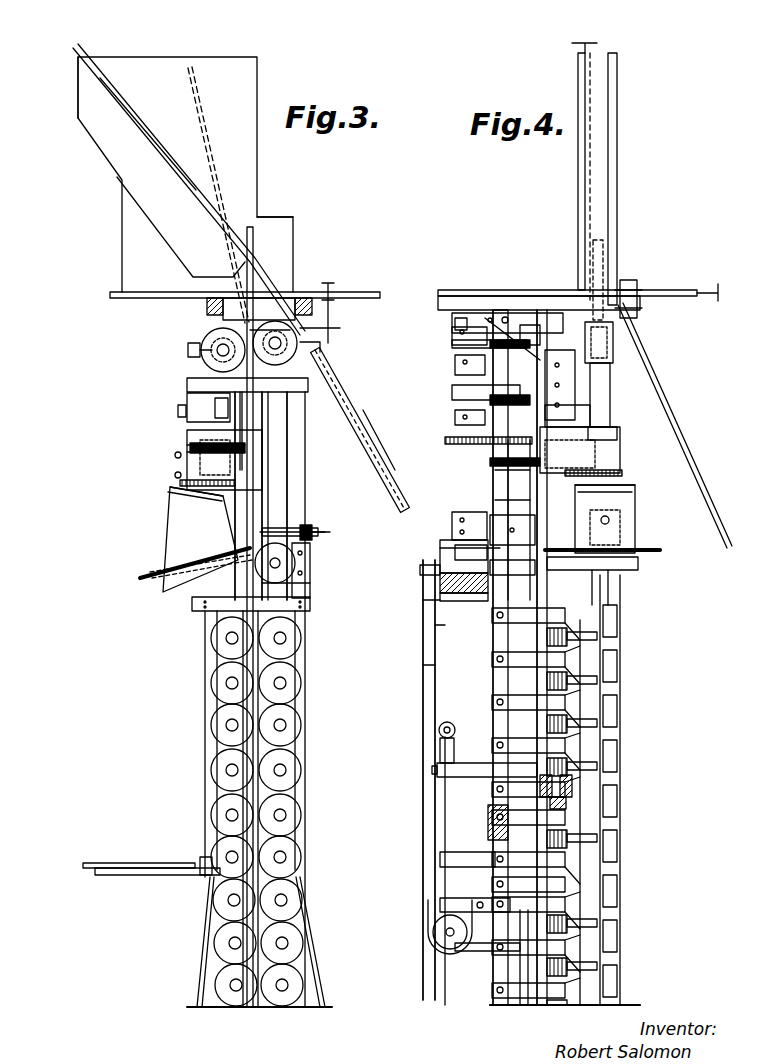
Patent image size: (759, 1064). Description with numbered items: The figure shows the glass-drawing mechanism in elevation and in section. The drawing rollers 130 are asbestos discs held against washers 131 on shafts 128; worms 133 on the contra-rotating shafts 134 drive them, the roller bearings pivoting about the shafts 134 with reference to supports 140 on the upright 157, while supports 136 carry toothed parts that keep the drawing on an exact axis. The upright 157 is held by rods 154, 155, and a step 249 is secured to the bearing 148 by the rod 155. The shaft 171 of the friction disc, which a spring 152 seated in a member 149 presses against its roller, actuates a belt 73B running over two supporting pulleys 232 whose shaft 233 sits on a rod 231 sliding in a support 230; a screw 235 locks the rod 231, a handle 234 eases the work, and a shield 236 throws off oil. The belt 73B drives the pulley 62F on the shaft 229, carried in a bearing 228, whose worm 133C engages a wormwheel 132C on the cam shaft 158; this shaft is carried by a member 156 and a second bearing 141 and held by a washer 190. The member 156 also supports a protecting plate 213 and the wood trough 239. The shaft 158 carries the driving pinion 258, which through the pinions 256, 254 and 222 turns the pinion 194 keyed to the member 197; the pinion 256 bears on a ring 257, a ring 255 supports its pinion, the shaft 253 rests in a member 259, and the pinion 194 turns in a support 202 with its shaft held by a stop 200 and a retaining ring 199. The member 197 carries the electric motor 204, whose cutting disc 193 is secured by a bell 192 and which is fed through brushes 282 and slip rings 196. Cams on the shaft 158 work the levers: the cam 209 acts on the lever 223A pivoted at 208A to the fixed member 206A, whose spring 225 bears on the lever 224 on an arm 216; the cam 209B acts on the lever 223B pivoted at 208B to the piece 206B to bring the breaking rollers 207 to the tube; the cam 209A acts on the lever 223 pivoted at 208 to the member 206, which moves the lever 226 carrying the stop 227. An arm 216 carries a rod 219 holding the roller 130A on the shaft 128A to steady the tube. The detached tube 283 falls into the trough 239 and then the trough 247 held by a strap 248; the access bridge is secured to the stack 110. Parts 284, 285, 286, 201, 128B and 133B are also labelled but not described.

In FIG. 3, the feed rod 284 is at (116, 98).
In FIG. 3, the detached tube 283 is at (203, 110).
In FIG. 3, the vertical rod 286 is at (246, 228).
In FIG. 4, the vertical rod 286 is at (595, 250).
In FIG. 3, the wood trough 239 is at (120, 120).
In FIG. 4, the wood trough 239 is at (612, 140).
In FIG. 3, the member 156 is at (210, 298).
In FIG. 4, the member 156 is at (632, 296).
In FIG. 3, the protecting plate 213 is at (332, 292).
In FIG. 4, the protecting plate 213 is at (715, 290).
In FIG. 3, the strap 248 is at (310, 345).
In FIG. 3, the support 140 is at (205, 340).
In FIG. 4, the support 140 is at (490, 325).
In FIG. 3, the rollers 207 is at (298, 352).
In FIG. 4, the rollers 207 is at (615, 335).
In FIG. 3, the arm 216 is at (318, 350).
In FIG. 4, the arm 216 is at (613, 352).
In FIG. 3, the lever 224 is at (190, 393).
In FIG. 4, the lever 224 is at (600, 400).
In FIG. 3, the spring 225 is at (195, 400).
In FIG. 4, the spring 225 is at (462, 320).
In FIG. 3, the retaining ring 199 is at (187, 408).
In FIG. 3, the stop 200 is at (190, 432).
In FIG. 3, the slip rings 196 is at (187, 455).
In FIG. 3, the brushes 282 is at (175, 473).
In FIG. 3, the ring 255 is at (190, 485).
In FIG. 4, the ring 255 is at (512, 482).
In FIG. 3, the pinion 194 is at (170, 490).
In FIG. 4, the pinion 194 is at (618, 478).
In FIG. 3, the member 197 is at (175, 510).
In FIG. 4, the member 197 is at (615, 492).
In FIG. 3, the box 201 is at (168, 537).
In FIG. 4, the box 201 is at (635, 520).
In FIG. 3, the electric motor 204 is at (160, 560).
In FIG. 4, the electric motor 204 is at (635, 540).
In FIG. 3, the cutting disc 193 is at (147, 578).
In FIG. 4, the cutting disc 193 is at (655, 551).
In FIG. 3, the bell 192 is at (190, 603).
In FIG. 4, the bell 192 is at (640, 566).
In FIG. 3, the rod 219 is at (262, 482).
In FIG. 4, the rod 219 is at (542, 588).
In FIG. 3, the shafts 134 is at (237, 500).
In FIG. 4, the shafts 134 is at (560, 787).
In FIG. 3, the driving pinion 258 is at (305, 518).
In FIG. 3, the stop 227 is at (300, 530).
In FIG. 3, the member 206 is at (322, 533).
In FIG. 3, the pinion 222 is at (325, 540).
In FIG. 4, the pinion 222 is at (622, 470).
In FIG. 3, the lever 226 is at (298, 560).
In FIG. 3, the shaft 128A is at (297, 565).
In FIG. 3, the roller 130A is at (305, 585).
In FIG. 3, the drawing rollers 130 is at (300, 718).
In FIG. 4, the drawing rollers 130 is at (615, 700).
In FIG. 3, the shafts 128 is at (278, 1000).
In FIG. 3, the bearing 148 is at (207, 862).
In FIG. 4, the bearing 148 is at (440, 900).
In FIG. 3, the step 249 is at (128, 858).
In FIG. 4, the step 249 is at (452, 905).
In FIG. 3, the rod 155 is at (210, 940).
In FIG. 4, the rod 155 is at (507, 1003).
In FIG. 3, the stack 110 is at (293, 240).
In FIG. 3, the roller 128B is at (272, 335).
In FIG. 3, the wood trough 247 is at (363, 410).
In FIG. 4, the wood trough 247 is at (387, 425).
In FIG. 4, the rod 285 is at (592, 60).
In FIG. 4, the shaft 253 is at (572, 417).
In FIG. 4, the rod 154 is at (668, 407).
In FIG. 4, the support 202 is at (605, 432).
In FIG. 4, the ring 257 is at (540, 458).
In FIG. 4, the washers 131 is at (618, 865).
In FIG. 4, the supports 136 is at (605, 955).
In FIG. 4, the pinion 254 is at (448, 318).
In FIG. 4, the cam 209B is at (452, 330).
In FIG. 4, the lever 223B is at (452, 343).
In FIG. 4, the fixed member 206A is at (455, 365).
In FIG. 4, the lever 223A is at (452, 398).
In FIG. 4, the cam 209A is at (455, 420).
In FIG. 4, the pivot 208A is at (448, 441).
In FIG. 4, the pinion 256 is at (500, 462).
In FIG. 4, the upright 157 is at (495, 490).
In FIG. 4, the cam shaft 158 is at (470, 510).
In FIG. 4, the cam 209 is at (452, 525).
In FIG. 4, the pivot 208 is at (510, 512).
In FIG. 4, the lever 223 is at (432, 545).
In FIG. 4, the washer 190 is at (440, 548).
In FIG. 4, the wormwheel 132C is at (440, 565).
In FIG. 4, the shaft 229 is at (440, 585).
In FIG. 4, the pulley 62F is at (440, 600).
In FIG. 4, the member 259 is at (530, 575).
In FIG. 4, the bearing 141 is at (497, 675).
In FIG. 4, the piece 206B is at (530, 330).
In FIG. 4, the pivot 208B is at (505, 330).
In FIG. 4, the column 133B is at (555, 330).
In FIG. 4, the bearing 228 is at (440, 608).
In FIG. 4, the worm 133C is at (440, 628).
In FIG. 4, the belt 73B is at (425, 675).
In FIG. 4, the handle 234 is at (440, 732).
In FIG. 4, the screw 235 is at (432, 770).
In FIG. 4, the support 230 is at (428, 785).
In FIG. 4, the rod 231 is at (445, 805).
In FIG. 4, the member 149 is at (488, 815).
In FIG. 4, the spring 152 is at (490, 860).
In FIG. 4, the supporting pulleys 232 is at (445, 938).
In FIG. 4, the shaft 233 is at (470, 950).
In FIG. 4, the deflecting shield 236 is at (490, 925).
In FIG. 4, the shaft 171 is at (500, 985).
In FIG. 4, the worms 133 is at (548, 1003).